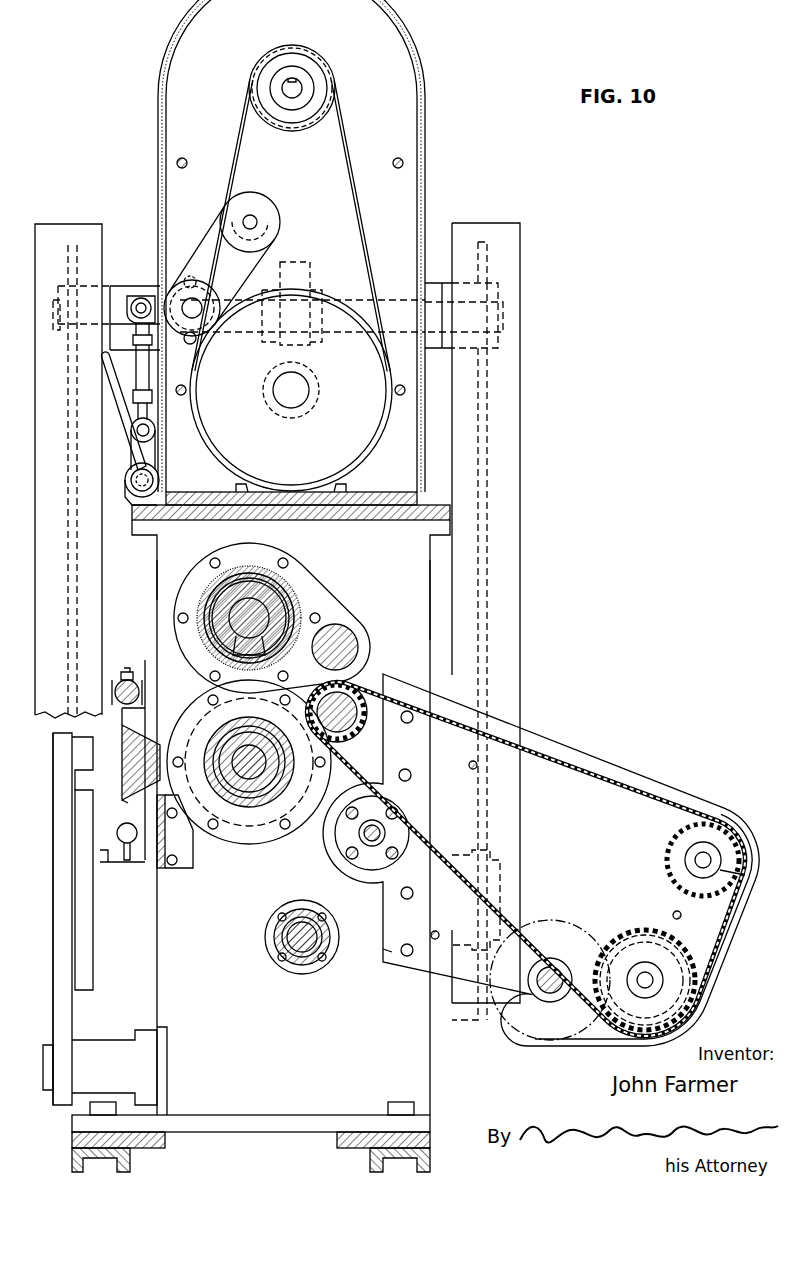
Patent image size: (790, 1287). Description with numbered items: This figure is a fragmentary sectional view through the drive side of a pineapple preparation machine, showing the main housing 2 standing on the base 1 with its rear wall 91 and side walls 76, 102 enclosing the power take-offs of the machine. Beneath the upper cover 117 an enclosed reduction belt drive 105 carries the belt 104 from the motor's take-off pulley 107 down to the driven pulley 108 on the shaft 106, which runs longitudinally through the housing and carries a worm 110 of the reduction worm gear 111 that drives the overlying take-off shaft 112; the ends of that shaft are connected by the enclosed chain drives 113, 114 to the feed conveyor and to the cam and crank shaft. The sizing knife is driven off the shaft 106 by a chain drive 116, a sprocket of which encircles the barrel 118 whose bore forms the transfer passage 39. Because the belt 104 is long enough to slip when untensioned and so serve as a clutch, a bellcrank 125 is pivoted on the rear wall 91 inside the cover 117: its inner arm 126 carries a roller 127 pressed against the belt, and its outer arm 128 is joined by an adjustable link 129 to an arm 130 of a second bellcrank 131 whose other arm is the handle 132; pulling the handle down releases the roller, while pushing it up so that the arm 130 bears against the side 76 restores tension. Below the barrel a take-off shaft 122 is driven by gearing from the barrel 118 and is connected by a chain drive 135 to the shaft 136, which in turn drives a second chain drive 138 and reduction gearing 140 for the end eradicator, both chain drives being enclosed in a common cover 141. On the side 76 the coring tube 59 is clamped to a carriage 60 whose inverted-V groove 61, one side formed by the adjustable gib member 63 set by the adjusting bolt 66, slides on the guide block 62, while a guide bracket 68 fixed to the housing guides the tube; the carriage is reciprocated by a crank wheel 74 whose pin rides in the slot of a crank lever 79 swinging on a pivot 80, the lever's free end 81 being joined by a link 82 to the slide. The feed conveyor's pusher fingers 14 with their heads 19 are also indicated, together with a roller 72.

The base 1 is at (64, 1162).
The main housing 2 is at (293, 817).
The pusher finger 14 is at (258, 655).
The head 19 is at (258, 625).
The transfer passage 39 is at (280, 608).
The coring tube 59 is at (126, 824).
The carriage 60 is at (154, 696).
The undercut groove 61 is at (124, 792).
The guide block 62 is at (122, 772).
The gib member 63 is at (146, 720).
The adjusting bolt 66 is at (128, 667).
The guide bracket 68 is at (164, 868).
The roller 72 is at (120, 683).
The crank wheel 74 is at (95, 965).
The side wall 76 is at (155, 603).
The crank lever 79 is at (53, 840).
The pivot 80 is at (100, 1040).
The free end 81 is at (58, 738).
The link 82 is at (84, 740).
The rear wall 91 is at (388, 574).
The side wall 102 is at (432, 590).
The belt 104 is at (361, 205).
The reduction belt drive 105 is at (296, 38).
The shaft 106 is at (292, 98).
The take-off pulley 107 is at (333, 68).
The driven pulley 108 is at (352, 375).
The worm 110 is at (292, 410).
The reduction worm gear 111 is at (308, 276).
The take-off shaft 112 is at (345, 300).
The chain drive 113 is at (68, 500).
The chain drive 114 is at (487, 497).
The chain drive 116 is at (244, 488).
The cover 117 is at (425, 195).
The barrel 118 is at (243, 578).
The take-off shaft 122 is at (352, 720).
The bellcrank 125 is at (205, 262).
The inner arm 126 is at (240, 265).
The roller 127 is at (240, 196).
The outer arm 128 is at (144, 293).
The adjustable link 129 is at (134, 372).
The arm 130 is at (154, 450).
The second bellcrank 131 is at (128, 472).
The handle 132 is at (103, 362).
The chain drive 135 is at (571, 848).
The shaft 136 is at (704, 852).
The second chain drive 138 is at (632, 902).
The reduction gearing 140 is at (604, 941).
The cover 141 is at (620, 770).